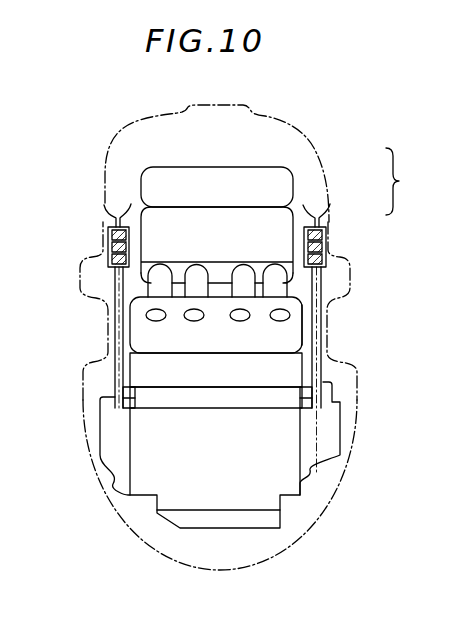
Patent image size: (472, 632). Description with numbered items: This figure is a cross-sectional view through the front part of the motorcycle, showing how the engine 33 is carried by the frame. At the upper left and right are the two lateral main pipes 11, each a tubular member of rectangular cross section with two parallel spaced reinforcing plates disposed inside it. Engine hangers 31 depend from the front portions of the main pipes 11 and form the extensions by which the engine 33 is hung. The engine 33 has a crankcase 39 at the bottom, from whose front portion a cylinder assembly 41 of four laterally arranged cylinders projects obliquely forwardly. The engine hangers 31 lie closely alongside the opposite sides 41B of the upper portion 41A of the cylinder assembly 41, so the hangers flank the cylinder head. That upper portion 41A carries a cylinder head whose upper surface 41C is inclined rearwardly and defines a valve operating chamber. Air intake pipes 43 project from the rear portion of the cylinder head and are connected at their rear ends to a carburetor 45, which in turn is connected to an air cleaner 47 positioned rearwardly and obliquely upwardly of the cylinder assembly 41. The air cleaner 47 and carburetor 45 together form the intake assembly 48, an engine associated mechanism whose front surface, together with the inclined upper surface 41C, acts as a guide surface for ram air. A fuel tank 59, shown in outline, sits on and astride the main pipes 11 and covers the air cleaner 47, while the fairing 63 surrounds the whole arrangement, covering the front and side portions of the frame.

The main pipe 11 is at (107, 240).
The engine hanger 31 is at (113, 283).
The engine 33 is at (145, 496).
The crankcase 39 is at (300, 442).
The cylinder assembly 41 is at (224, 337).
The upper portion 41A is at (287, 365).
The opposite sides 41B is at (125, 323).
The upper surface 41C is at (293, 327).
The air intake pipe 43 is at (195, 275).
The carburetor 45 is at (281, 224).
The air cleaner 47 is at (285, 190).
The intake assembly 48 is at (283, 215).
The fuel tank 59 is at (305, 132).
The fairing 63 is at (329, 507).